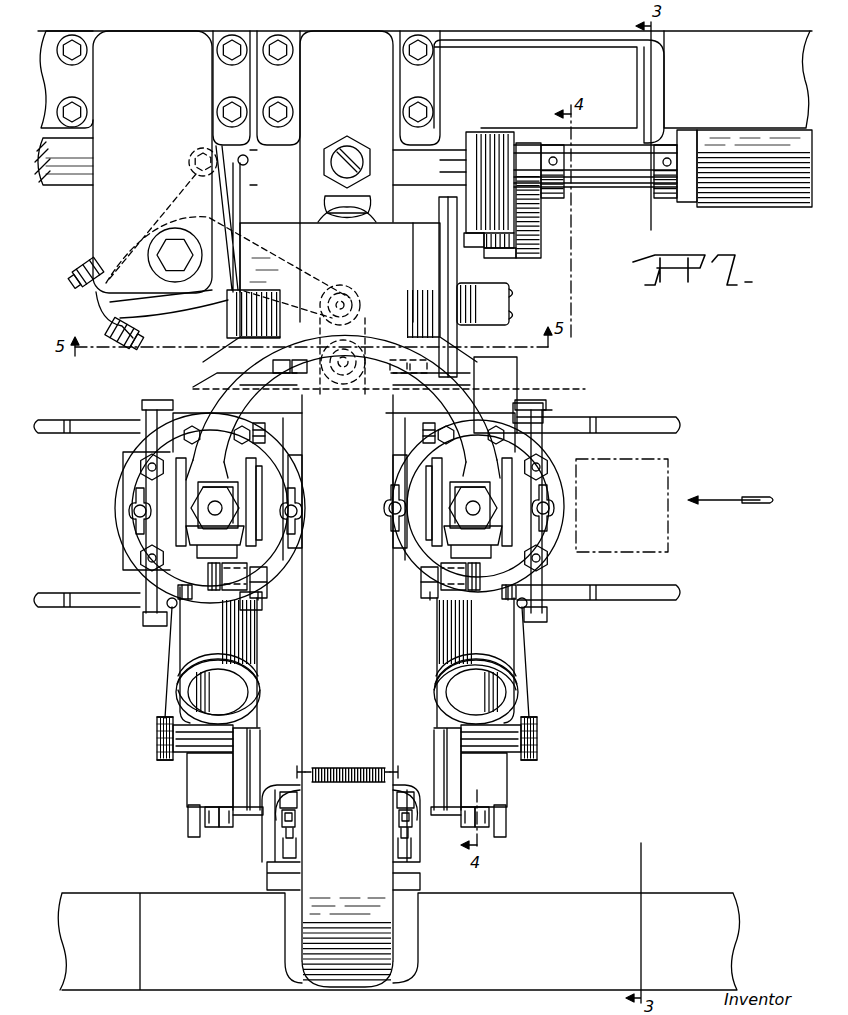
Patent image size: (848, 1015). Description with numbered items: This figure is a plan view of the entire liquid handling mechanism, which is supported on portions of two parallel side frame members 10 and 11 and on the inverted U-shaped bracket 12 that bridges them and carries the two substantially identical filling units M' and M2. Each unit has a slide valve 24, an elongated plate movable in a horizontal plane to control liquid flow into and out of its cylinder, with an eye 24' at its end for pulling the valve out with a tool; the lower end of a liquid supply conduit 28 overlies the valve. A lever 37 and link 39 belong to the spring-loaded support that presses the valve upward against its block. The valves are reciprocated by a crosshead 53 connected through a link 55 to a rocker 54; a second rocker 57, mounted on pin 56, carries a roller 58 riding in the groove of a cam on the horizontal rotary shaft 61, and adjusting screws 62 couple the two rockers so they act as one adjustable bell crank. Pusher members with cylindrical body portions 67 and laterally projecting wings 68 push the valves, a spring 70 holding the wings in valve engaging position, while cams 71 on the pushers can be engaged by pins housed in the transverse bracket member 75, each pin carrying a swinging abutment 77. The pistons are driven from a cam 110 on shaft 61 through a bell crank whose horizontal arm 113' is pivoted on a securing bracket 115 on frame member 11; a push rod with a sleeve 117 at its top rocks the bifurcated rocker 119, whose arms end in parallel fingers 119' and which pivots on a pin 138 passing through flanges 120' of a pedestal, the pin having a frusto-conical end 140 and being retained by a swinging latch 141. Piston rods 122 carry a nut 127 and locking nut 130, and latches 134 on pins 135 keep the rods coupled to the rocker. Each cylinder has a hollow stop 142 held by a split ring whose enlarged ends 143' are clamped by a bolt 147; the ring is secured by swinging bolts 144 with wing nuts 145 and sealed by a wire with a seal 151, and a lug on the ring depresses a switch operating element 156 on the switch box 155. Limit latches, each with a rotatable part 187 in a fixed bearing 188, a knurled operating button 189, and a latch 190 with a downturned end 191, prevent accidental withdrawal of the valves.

The side frame member 10 is at (98, 910).
The side frame member 11 is at (705, 40).
The inverted U-shaped bracket 12 is at (347, 691).
The slide valve 24 is at (343, 780).
The eye 24' is at (340, 819).
The conduit 28 is at (190, 650).
The lever 37 is at (48, 420).
The link 39 is at (147, 620).
The crosshead 53 is at (213, 380).
The rocker 54 is at (310, 271).
The link 55 is at (360, 311).
The pin 56 is at (167, 256).
The rocker 57 is at (222, 202).
The roller 58 is at (213, 150).
The rotary shaft 61 is at (609, 180).
The adjusting screw 62 is at (80, 258).
The cylindrical body portion 67 is at (259, 843).
The pusher wing 68 is at (228, 832).
The spring 70 is at (342, 783).
The cam 71 is at (294, 855).
The transverse bracket member 75 is at (287, 787).
The swinging abutment 77 is at (293, 800).
The cam 110 is at (534, 259).
The horizontal arm 113' is at (481, 173).
The securing bracket 115 is at (624, 88).
The sleeve 117 is at (338, 136).
The rocker 119 is at (343, 407).
The parallel fingers 119' is at (344, 493).
The flanges 120' is at (340, 272).
The piston rod 122 is at (215, 512).
The nut 127 is at (236, 552).
The locking nut 130 is at (228, 503).
The latch 134 is at (430, 480).
The pin 135 is at (420, 466).
The pivot pin 138 is at (232, 305).
The frusto-conical end portion 140 is at (477, 303).
The swinging latch 141 is at (455, 277).
The stop 142 is at (262, 578).
The enlargements 143' is at (267, 612).
The swinging bolts 144 is at (302, 505).
The wing nuts 145 is at (293, 493).
The bolt 147 is at (266, 582).
The seal 151 is at (172, 607).
The switch box 155 is at (500, 397).
The switch operating element 156 is at (522, 413).
The rotatable part 187 is at (183, 733).
The fixed bearing 188 is at (212, 742).
The knurled operating button 189 is at (163, 752).
The latch 190 is at (241, 782).
The downturned end 191 is at (213, 826).
The filling unit M' is at (615, 505).
The filling unit M2 is at (118, 485).